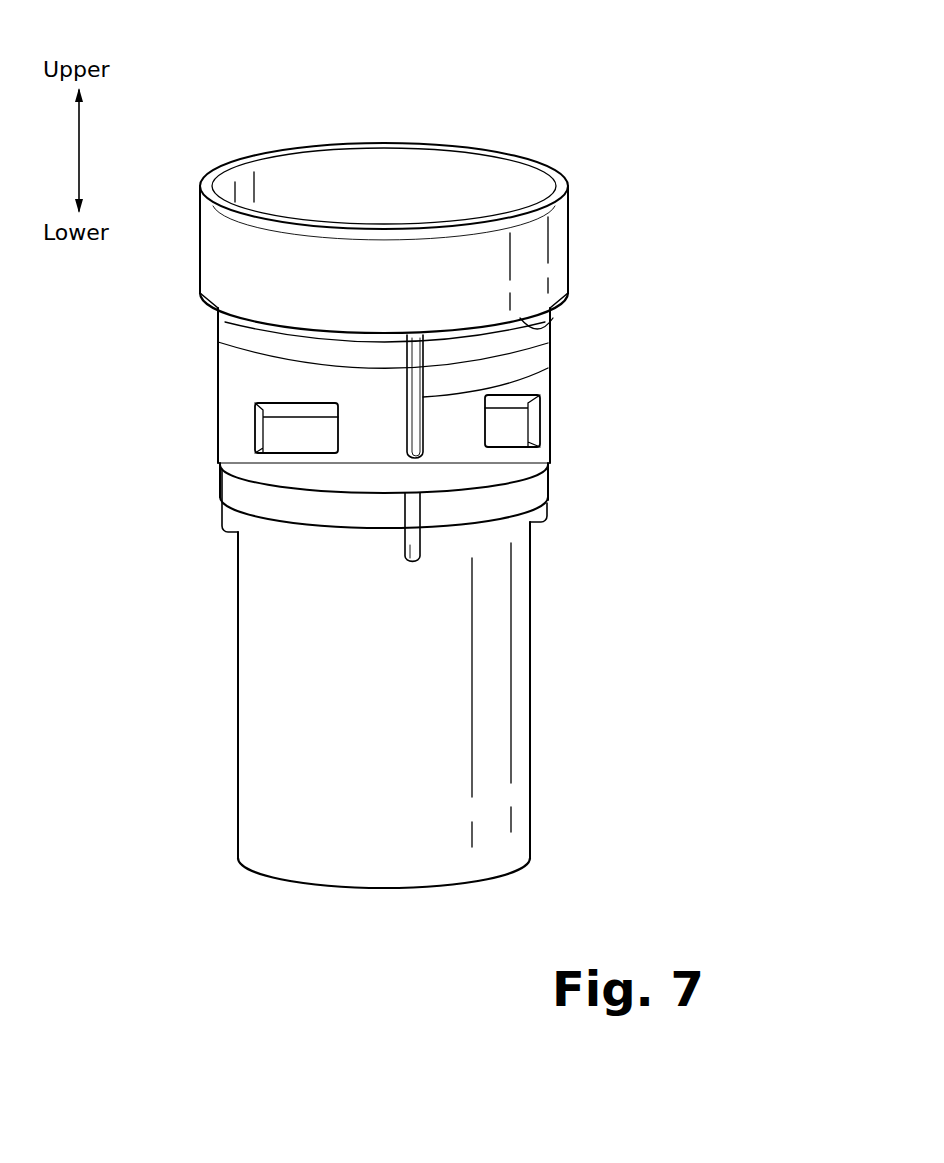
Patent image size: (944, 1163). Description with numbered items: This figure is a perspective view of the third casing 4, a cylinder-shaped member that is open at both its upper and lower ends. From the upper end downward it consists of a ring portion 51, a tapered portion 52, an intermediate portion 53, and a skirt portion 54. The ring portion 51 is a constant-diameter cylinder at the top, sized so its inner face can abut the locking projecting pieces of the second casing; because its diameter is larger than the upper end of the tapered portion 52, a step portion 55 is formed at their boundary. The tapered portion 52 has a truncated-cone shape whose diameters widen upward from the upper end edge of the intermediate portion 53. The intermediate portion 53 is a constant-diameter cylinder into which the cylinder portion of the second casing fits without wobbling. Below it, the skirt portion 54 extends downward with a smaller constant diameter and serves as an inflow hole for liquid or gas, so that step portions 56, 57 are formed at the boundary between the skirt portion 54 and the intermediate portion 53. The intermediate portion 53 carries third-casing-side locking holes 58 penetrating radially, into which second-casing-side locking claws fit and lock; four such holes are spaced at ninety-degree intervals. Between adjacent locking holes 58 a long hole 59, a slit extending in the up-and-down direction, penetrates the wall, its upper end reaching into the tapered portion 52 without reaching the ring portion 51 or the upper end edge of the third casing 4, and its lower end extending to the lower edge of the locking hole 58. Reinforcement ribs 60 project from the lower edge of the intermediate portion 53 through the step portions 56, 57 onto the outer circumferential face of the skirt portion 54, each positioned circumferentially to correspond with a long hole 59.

The third casing 4 is at (518, 131).
The ring portion 51 is at (207, 247).
The tapered portion 52 is at (216, 323).
The intermediate portion 53 is at (228, 368).
The skirt portion 54 is at (243, 723).
The step portion 55 is at (553, 326).
The step portion 56 is at (232, 493).
The step portion 57 is at (293, 525).
The third-casing-side locking hole 58 is at (258, 420).
The long hole 59 is at (548, 366).
The reinforcement rib 60 is at (221, 522).